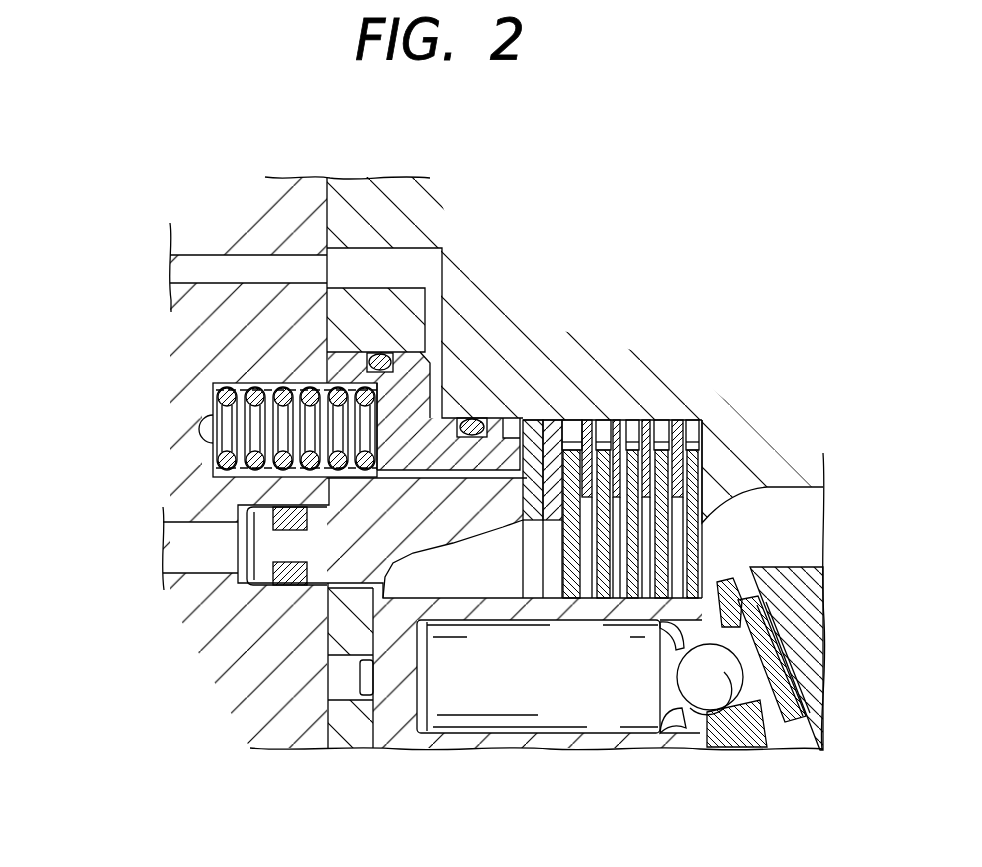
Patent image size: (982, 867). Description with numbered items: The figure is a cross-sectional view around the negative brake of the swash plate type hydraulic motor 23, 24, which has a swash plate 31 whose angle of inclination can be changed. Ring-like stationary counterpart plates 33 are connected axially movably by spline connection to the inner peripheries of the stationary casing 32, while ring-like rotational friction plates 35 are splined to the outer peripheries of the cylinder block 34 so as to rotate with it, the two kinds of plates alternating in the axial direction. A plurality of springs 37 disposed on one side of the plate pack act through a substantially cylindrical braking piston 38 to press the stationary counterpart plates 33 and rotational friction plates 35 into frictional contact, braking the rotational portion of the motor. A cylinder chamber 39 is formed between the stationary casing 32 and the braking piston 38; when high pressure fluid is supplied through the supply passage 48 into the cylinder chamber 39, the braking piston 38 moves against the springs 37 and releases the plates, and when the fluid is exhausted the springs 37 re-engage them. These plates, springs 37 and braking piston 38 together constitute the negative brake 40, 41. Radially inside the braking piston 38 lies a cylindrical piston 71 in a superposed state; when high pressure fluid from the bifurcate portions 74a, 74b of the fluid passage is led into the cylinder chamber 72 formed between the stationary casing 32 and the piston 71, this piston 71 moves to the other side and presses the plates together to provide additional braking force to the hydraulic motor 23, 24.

The stationary casing 32 is at (397, 188).
The supply passage 48 is at (170, 264).
The bifurcate portion of fluid passage 74a is at (141, 547).
The bifurcate portion of fluid passage 74b is at (165, 538).
The springs 37 is at (213, 390).
The braking piston 38 is at (425, 411).
The cylinder chamber 39 is at (401, 466).
The cylinder chamber 72 is at (241, 588).
The cylindrical piston 71 is at (328, 640).
The cylinder block 34 is at (397, 745).
The rotational friction plates 35 is at (628, 600).
The hydraulic motor 23 is at (612, 400).
The hydraulic motor 24 is at (612, 400).
The negative brake 40 is at (587, 444).
The negative brake 41 is at (568, 415).
The stationary counterpart plates 33 is at (652, 418).
The swash plate 31 is at (786, 567).